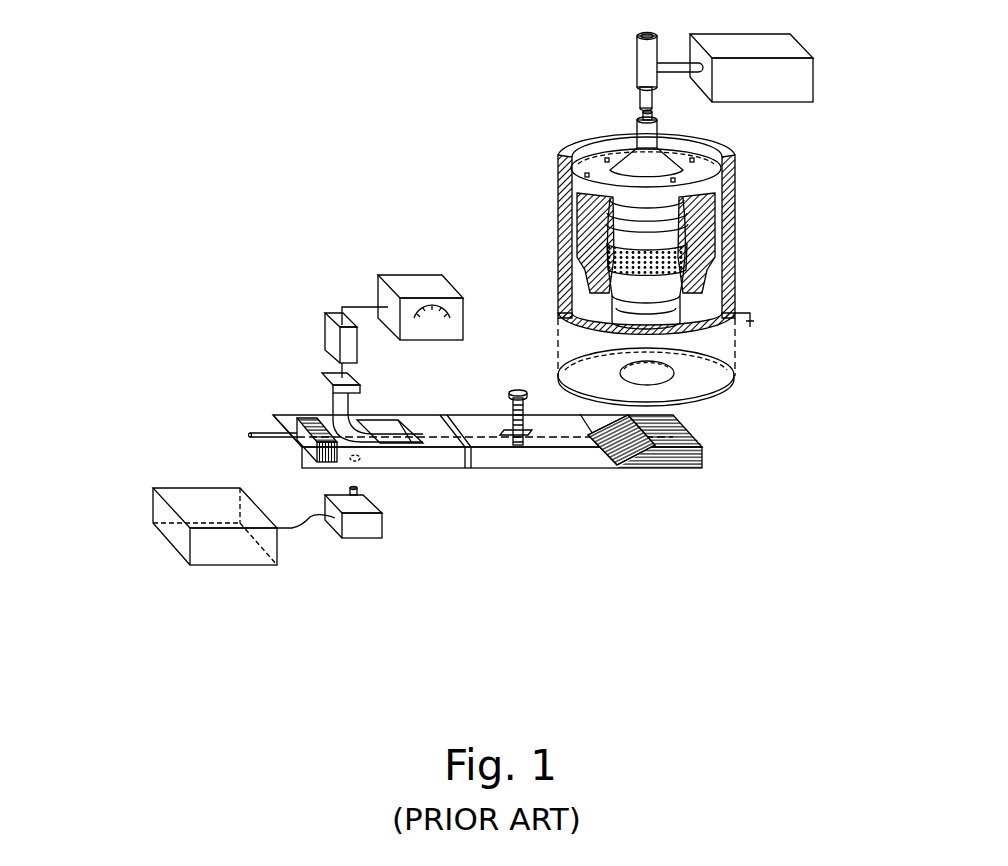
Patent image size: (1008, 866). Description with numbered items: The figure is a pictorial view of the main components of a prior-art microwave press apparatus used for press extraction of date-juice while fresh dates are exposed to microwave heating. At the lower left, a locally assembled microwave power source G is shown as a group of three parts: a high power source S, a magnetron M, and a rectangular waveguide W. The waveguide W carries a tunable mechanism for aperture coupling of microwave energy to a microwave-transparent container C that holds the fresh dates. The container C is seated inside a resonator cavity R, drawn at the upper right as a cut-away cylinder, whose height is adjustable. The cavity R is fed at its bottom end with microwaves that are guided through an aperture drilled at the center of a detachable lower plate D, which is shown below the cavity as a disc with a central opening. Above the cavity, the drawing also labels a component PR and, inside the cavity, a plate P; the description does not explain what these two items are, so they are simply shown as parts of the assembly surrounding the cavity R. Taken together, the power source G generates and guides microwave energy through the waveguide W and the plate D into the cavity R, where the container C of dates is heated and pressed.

The pressure regulator PR is at (797, 80).
The resonator cavity R is at (735, 227).
The showerhead plate P is at (613, 213).
The microwave-transparent container C is at (583, 268).
The detachable lower plate D is at (720, 388).
The microwave power source G is at (142, 262).
The rectangular waveguide W is at (433, 468).
The high power source S is at (237, 552).
The magnetron M is at (382, 530).